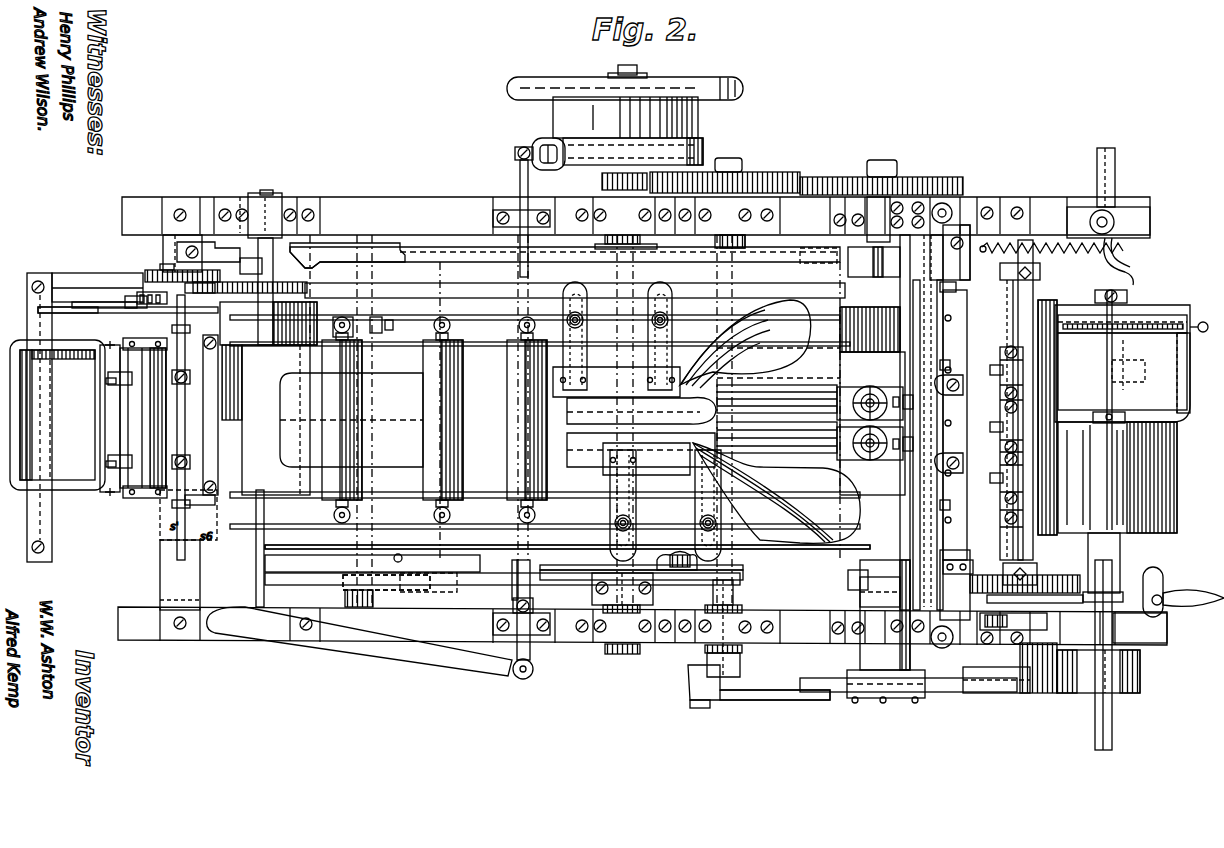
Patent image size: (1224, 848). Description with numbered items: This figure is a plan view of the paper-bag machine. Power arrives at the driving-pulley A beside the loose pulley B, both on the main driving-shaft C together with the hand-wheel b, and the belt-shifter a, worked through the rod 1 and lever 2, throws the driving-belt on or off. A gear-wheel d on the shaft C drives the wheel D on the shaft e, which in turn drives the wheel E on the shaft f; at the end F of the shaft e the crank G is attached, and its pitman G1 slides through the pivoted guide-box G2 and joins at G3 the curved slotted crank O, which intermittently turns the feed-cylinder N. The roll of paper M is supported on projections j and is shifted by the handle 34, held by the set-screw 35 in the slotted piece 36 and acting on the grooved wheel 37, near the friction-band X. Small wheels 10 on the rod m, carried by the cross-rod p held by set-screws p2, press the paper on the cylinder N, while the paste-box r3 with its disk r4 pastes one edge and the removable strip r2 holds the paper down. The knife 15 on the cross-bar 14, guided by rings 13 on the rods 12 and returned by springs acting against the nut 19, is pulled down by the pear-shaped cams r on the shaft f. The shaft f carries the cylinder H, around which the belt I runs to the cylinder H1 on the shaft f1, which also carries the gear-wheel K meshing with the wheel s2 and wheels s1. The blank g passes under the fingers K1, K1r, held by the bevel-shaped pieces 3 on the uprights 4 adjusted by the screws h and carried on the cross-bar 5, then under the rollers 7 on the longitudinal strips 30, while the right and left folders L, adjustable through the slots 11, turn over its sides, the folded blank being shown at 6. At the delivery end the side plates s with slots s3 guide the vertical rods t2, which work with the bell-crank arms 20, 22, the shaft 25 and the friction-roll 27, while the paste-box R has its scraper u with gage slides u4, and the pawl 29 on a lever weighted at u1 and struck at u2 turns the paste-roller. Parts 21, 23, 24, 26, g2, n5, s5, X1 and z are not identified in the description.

The rod 1 is at (520, 182).
The lever 2 is at (370, 643).
The bevel-shaped pieces 3 is at (860, 423).
The uprights 4 is at (894, 422).
The cross-bar 5 is at (933, 379).
The blank position 6 is at (634, 421).
The rollers 7 is at (434, 420).
The small wheels 10 is at (999, 453).
The slots 11 is at (582, 305).
The uprights or rods 12 is at (940, 203).
The rings 13 is at (952, 208).
The cross-bar 14 is at (943, 430).
The knife 15 is at (949, 396).
The shoulder or nut 19 is at (128, 318).
The arm of bell-crank lever 20 is at (325, 330).
The ratchet block 21 is at (345, 596).
The arm of bell-crank lever 22 is at (374, 325).
The frame bolt 23 is at (309, 215).
The slide block 24 is at (425, 592).
The shaft 25 is at (490, 575).
The connecting bar 26 is at (743, 576).
The friction-roll 27 is at (657, 565).
The pawl 29 is at (120, 300).
The longitudinal strips 30 is at (567, 538).
The handle 34 is at (1193, 598).
The set-screw 35 is at (1160, 570).
The slotted piece 36 is at (1140, 628).
The grooved wheel 37 is at (1118, 590).
The driving-pulley A is at (698, 122).
The loose pulley B is at (703, 150).
The main driving-shaft C is at (637, 68).
The gear-wheel D is at (762, 170).
The gear-wheel E is at (830, 176).
The shaft end F is at (742, 657).
The crank G is at (688, 675).
The pitman G1 is at (812, 702).
The pivoted guide-box G2 is at (905, 690).
The pitman connection G3 is at (1025, 690).
The cylinder H is at (870, 329).
The cylinder H1 is at (268, 361).
The belt I is at (573, 420).
The gear-wheel K is at (345, 263).
The fingers K1 is at (143, 418).
The fingers K1r is at (777, 408).
The folders L is at (770, 421).
The roll of paper M is at (1122, 411).
The feed-cylinder N is at (1046, 417).
The curved slotted crank O is at (1025, 688).
The paste-box R is at (57, 415).
The friction-band X is at (1098, 671).
The shaft X1 is at (1140, 693).
The belt-shifter a is at (540, 138).
The hand-wheel b is at (704, 72).
The gear-wheel d is at (600, 182).
The shaft e is at (745, 243).
The shaft f is at (895, 296).
The shaft f1 is at (256, 570).
The paper blank g is at (351, 420).
The housing g2 is at (848, 255).
The screws h is at (880, 390).
The projections j is at (1128, 206).
The rod m is at (1015, 296).
The spring n5 is at (1051, 252).
The cross-rod p is at (1050, 290).
The set-screws p2 is at (968, 560).
The pear-shaped cams r is at (880, 592).
The removable strip r2 is at (949, 424).
The paste-box r3 is at (1193, 390).
The disk r4 is at (1140, 320).
The uprights or side plates s is at (918, 422).
The gear-wheels s1 is at (191, 262).
The gear-wheel s2 is at (250, 292).
The slots s3 is at (251, 266).
The shaft s5 is at (176, 427).
The vertical rods t2 is at (223, 415).
The scraper u is at (110, 418).
The lever end u1 is at (60, 313).
The lever end u2 is at (187, 395).
The slides u4 is at (108, 378).
The block z is at (180, 575).